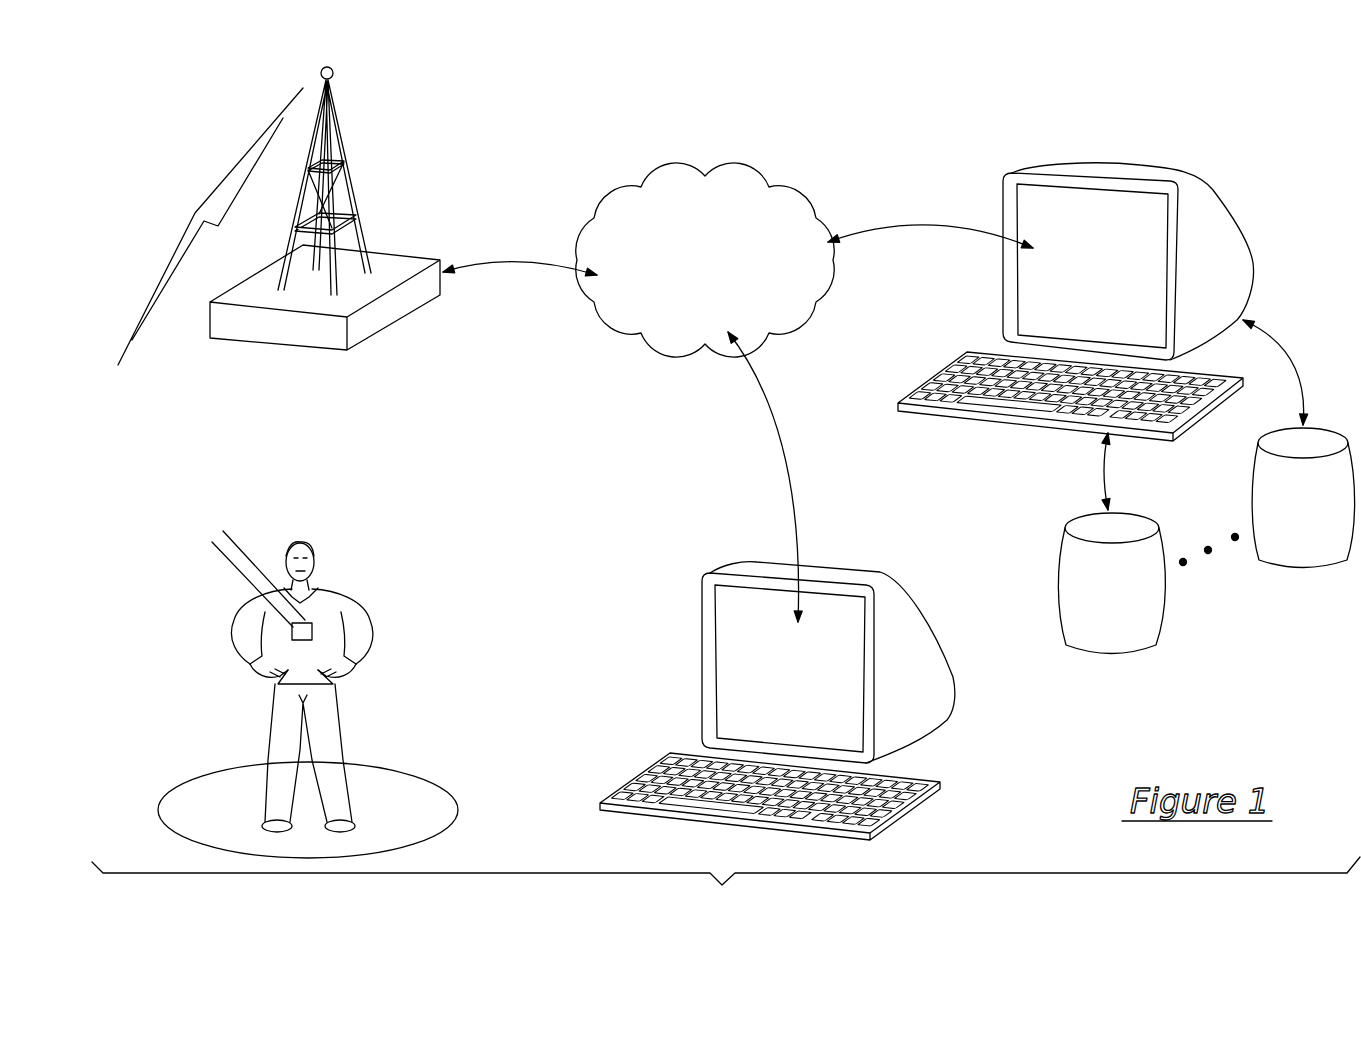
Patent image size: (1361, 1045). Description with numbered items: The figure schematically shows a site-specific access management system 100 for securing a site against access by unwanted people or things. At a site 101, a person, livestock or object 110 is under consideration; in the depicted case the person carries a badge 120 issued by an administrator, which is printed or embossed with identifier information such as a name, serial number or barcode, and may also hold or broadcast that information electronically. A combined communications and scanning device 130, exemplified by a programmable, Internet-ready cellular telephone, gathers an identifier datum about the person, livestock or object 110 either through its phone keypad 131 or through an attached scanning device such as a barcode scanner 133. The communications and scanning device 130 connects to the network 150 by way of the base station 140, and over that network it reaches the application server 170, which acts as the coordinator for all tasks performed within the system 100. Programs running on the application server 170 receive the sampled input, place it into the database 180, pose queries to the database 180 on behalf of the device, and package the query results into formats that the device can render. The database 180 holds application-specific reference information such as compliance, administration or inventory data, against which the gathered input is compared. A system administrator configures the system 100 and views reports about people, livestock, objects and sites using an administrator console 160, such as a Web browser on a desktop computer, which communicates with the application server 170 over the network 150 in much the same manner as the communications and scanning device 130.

The site-specific access management system 100 is at (726, 886).
The site 101 is at (198, 793).
The person, livestock or object 110 is at (340, 723).
The badge 120 is at (338, 617).
The communications and scanning device 130 is at (163, 286).
The phone keypad 131 is at (200, 463).
The barcode scanner 133 is at (227, 522).
The base station 140 is at (353, 166).
The network 150 is at (705, 260).
The administrator console 160 is at (837, 565).
The application server 170 is at (1135, 168).
The database 180 is at (1165, 617).